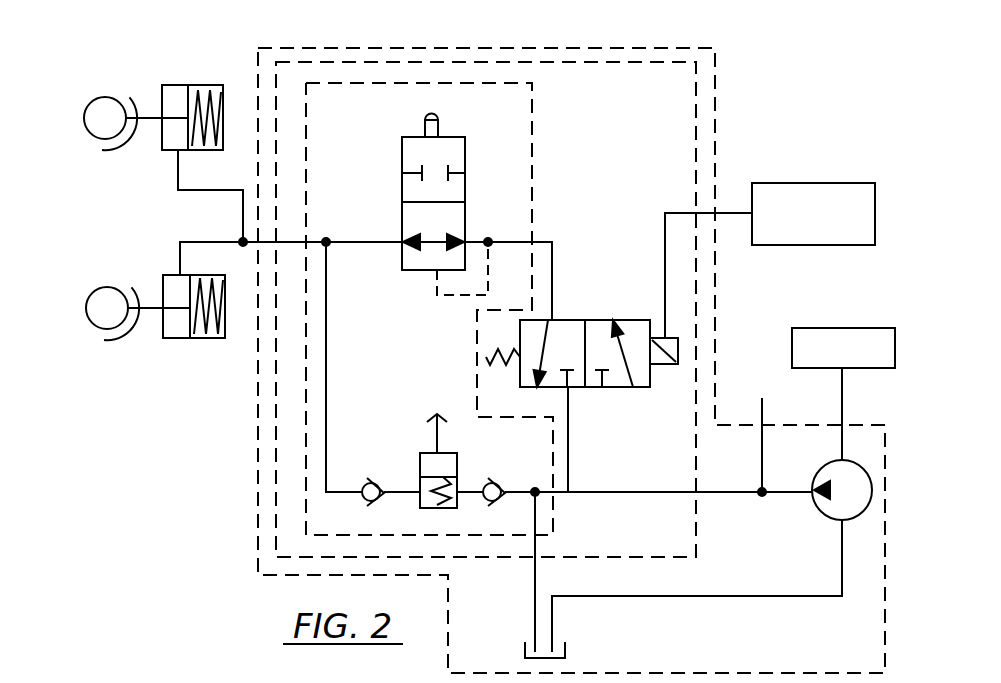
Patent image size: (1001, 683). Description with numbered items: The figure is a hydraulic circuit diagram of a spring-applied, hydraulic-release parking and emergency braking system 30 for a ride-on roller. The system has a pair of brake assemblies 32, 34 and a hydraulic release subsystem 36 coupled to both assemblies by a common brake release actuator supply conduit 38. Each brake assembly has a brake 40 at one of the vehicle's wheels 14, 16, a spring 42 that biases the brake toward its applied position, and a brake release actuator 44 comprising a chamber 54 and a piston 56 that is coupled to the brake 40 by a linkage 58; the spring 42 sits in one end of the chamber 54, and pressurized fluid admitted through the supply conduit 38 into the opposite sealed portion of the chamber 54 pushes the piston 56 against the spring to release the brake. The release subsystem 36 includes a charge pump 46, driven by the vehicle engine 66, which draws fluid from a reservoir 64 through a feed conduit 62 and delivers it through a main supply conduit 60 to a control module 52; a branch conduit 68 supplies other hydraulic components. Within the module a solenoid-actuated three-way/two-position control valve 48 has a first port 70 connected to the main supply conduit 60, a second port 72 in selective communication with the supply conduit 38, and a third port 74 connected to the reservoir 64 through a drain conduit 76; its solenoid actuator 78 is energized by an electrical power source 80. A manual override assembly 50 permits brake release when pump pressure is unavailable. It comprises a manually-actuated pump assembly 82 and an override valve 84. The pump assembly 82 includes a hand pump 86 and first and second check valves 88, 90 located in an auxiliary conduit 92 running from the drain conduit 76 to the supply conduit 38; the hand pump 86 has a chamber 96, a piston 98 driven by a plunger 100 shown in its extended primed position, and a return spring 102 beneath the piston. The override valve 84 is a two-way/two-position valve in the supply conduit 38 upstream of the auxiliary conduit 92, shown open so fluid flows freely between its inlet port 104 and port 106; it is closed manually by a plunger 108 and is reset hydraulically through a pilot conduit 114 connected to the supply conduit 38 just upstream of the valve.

The first wheel brake 14 is at (98, 102).
The second wheel brake 16 is at (100, 293).
The SAHR parking and emergency braking system 30 is at (880, 95).
The brake assembly 32 is at (156, 223).
The brake assembly 34 is at (121, 338).
The hydraulic release subsystem 36 is at (257, 543).
The brake release actuator supply conduit 38 is at (240, 243).
The brake 40 is at (133, 97).
The spring 42 is at (212, 87).
The brake release actuator 44 is at (196, 82).
The charge pump 46 is at (815, 515).
The control valve 48 is at (578, 336).
The manual override assembly 50 is at (535, 93).
The control module 52 is at (716, 125).
The chamber 54 is at (165, 150).
The piston 56 is at (214, 150).
The linkage 58 is at (118, 148).
The main supply conduit 60 is at (738, 494).
The feed conduit 62 is at (775, 598).
The reservoir 64 is at (568, 648).
The engine 66 is at (852, 328).
The conduit 68 is at (764, 400).
The first port 70 is at (568, 389).
The second port 72 is at (548, 320).
The third port 74 is at (530, 389).
The drain conduit 76 is at (538, 553).
The solenoid actuator 78 is at (665, 366).
The power source 80 is at (858, 183).
The pump assembly 82 is at (430, 472).
The override valve 84 is at (431, 215).
The hand pump 86 is at (420, 458).
The first check valve 88 is at (490, 505).
The second check valve 90 is at (362, 501).
The auxiliary conduit 92 is at (328, 348).
The chamber 96 is at (458, 486).
The piston 98 is at (455, 470).
The plunger 100 is at (445, 440).
The return spring 102 is at (421, 503).
The inlet port 104 is at (468, 238).
The port 106 is at (400, 238).
The plunger 108 is at (440, 123).
The pilot conduit 114 is at (458, 298).